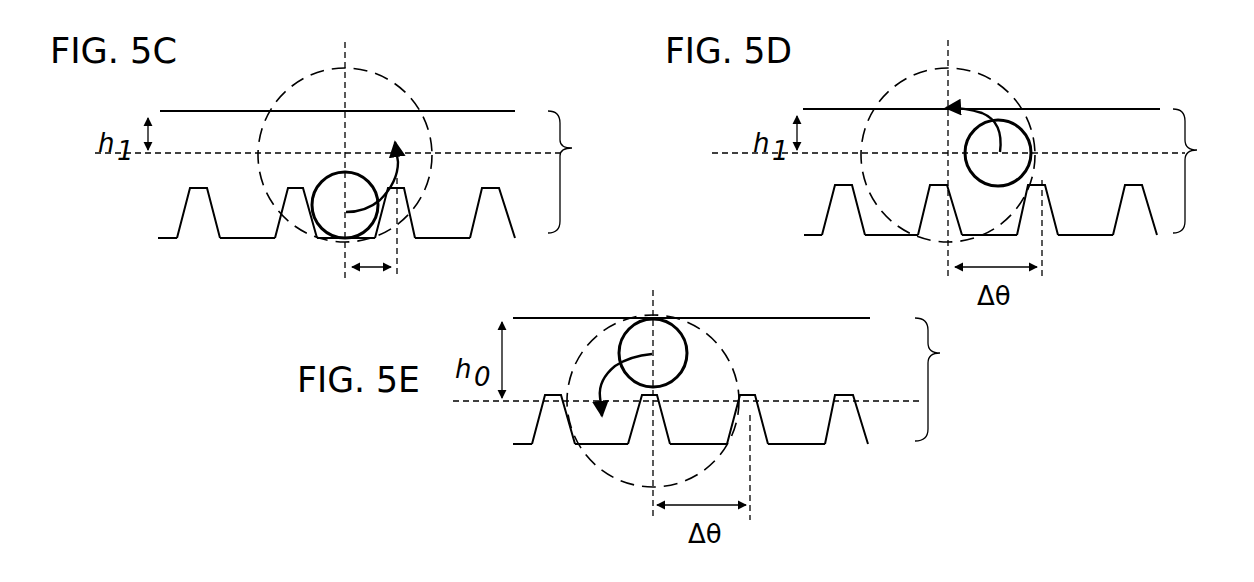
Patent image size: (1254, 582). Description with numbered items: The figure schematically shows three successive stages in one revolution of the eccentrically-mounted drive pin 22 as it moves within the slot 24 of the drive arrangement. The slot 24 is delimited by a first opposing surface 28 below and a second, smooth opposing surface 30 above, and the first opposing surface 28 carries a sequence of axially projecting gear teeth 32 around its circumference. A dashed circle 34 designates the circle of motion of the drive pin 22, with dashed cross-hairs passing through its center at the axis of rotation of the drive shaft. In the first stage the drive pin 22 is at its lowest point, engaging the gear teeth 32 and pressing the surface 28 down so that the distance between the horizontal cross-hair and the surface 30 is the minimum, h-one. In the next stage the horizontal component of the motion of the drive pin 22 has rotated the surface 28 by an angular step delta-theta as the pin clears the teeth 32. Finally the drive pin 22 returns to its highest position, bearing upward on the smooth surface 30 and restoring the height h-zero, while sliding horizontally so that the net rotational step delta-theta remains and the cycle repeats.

In FIG. 5C, the drive pin 22 is at (343, 240).
In FIG. 5D, the drive pin 22 is at (1000, 110).
In FIG. 5E, the drive pin 22 is at (654, 318).
In FIG. 5C, the slot 24 is at (588, 172).
In FIG. 5D, the slot 24 is at (1209, 171).
In FIG. 5E, the slot 24 is at (946, 379).
In FIG. 5C, the first opposing surface 28 is at (240, 240).
In FIG. 5D, the first opposing surface 28 is at (893, 236).
In FIG. 5E, the first opposing surface 28 is at (612, 445).
In FIG. 5C, the second opposing surface 30 is at (490, 111).
In FIG. 5D, the second opposing surface 30 is at (1130, 107).
In FIG. 5E, the second opposing surface 30 is at (600, 318).
In FIG. 5C, the gear teeth 32 is at (195, 203).
In FIG. 5D, the gear teeth 32 is at (832, 203).
In FIG. 5E, the gear teeth 32 is at (550, 414).
In FIG. 5C, the dashed circle 34 is at (285, 103).
In FIG. 5D, the dashed circle 34 is at (948, 68).
In FIG. 5E, the dashed circle 34 is at (591, 340).